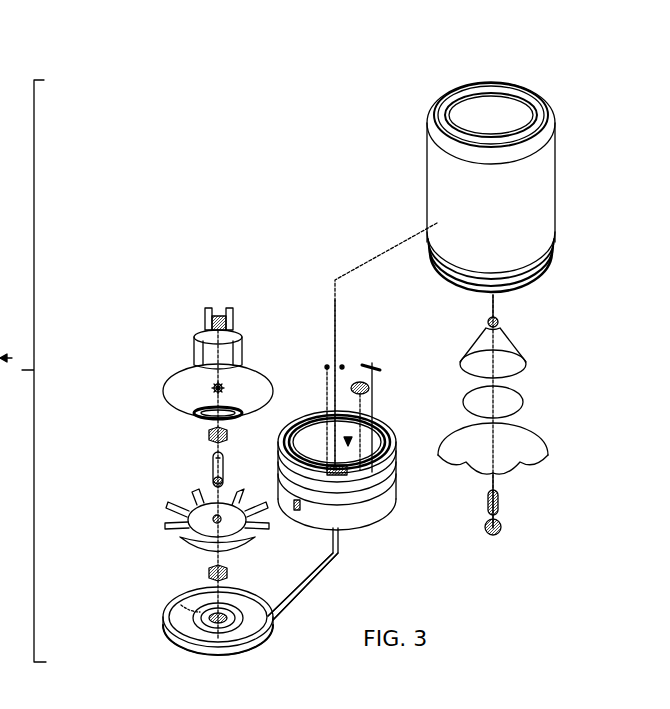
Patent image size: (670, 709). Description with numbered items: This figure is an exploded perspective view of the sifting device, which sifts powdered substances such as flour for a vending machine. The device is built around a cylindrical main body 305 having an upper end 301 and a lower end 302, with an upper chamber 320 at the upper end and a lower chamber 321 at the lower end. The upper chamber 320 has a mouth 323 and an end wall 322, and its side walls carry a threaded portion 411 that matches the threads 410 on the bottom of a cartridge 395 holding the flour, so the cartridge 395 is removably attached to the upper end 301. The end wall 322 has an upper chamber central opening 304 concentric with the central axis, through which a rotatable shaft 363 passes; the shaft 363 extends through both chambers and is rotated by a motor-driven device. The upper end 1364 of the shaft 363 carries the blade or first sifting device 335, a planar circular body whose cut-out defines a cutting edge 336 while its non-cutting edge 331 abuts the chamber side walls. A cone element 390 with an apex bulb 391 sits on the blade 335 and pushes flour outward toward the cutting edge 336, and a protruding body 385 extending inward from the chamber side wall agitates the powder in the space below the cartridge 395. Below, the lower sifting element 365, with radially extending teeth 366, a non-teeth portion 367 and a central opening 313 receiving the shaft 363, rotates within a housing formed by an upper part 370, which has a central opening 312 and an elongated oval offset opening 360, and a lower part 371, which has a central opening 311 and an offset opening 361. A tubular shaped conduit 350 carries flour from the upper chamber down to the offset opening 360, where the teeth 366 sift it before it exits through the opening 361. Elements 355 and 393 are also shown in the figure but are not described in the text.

The upper end 301 is at (285, 410).
The lower end 302 is at (352, 535).
The upper chamber central opening 304 is at (384, 500).
The main body 305 is at (412, 500).
The central opening 311 is at (193, 620).
The central opening 312 is at (200, 389).
The lower sifting element central opening 313 is at (215, 517).
The upper chamber 320 is at (373, 410).
The lower chamber 321 is at (343, 378).
The end wall 322 is at (320, 413).
The mouth 323 is at (231, 462).
The non-cutting edge 331 is at (548, 455).
The blade 335 is at (515, 435).
The cutting edge 336 is at (503, 475).
The upper end of the rotatable shaft 1364 is at (500, 505).
The tubular shaped conduit 350 is at (195, 345).
The lead wires 355 is at (286, 612).
The offset opening 360 is at (190, 418).
The offset opening 361 is at (178, 602).
The rotatable shaft 363 is at (212, 465).
The lower sifting element 365 is at (156, 527).
The radially extending teeth 366 is at (185, 510).
The non-teeth portion 367 is at (255, 540).
The upper part 370 is at (163, 392).
The lower part 371 is at (163, 625).
The protruding body 385 is at (372, 365).
The cone element 390 is at (525, 352).
The apex bulb 391 is at (500, 322).
The shaft 393 is at (500, 316).
The cartridge 395 is at (558, 205).
The threads 410 is at (555, 268).
The threaded portion 411 is at (397, 433).